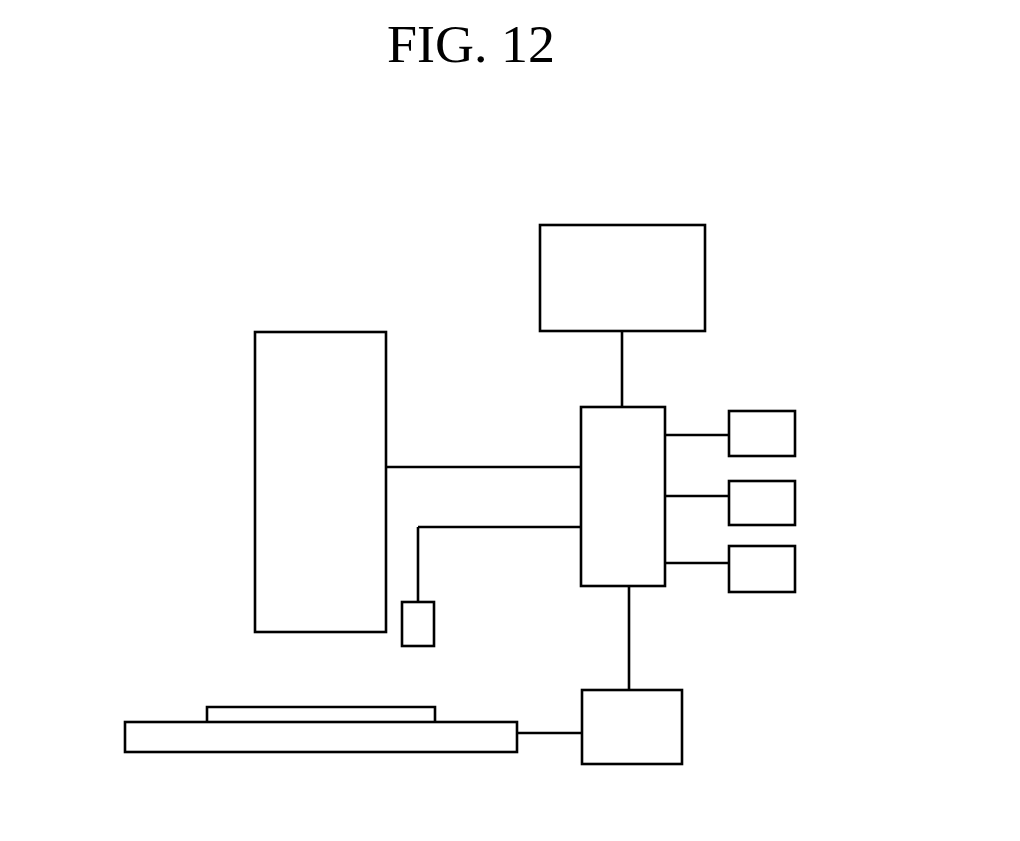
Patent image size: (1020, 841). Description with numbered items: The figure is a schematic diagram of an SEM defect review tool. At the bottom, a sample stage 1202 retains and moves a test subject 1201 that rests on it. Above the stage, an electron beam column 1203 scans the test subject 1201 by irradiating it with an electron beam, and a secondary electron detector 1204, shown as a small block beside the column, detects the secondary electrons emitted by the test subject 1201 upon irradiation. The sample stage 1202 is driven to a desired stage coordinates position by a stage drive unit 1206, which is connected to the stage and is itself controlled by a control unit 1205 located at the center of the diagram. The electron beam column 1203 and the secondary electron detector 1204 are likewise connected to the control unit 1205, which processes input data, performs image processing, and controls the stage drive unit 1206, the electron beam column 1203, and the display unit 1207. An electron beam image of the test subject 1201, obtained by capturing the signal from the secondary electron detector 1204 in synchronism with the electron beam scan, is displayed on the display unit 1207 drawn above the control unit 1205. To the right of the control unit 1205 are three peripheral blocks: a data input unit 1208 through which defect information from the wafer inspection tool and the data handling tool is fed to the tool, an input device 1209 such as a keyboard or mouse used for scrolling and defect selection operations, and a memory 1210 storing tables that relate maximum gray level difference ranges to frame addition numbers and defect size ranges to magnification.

The test subject 1201 is at (227, 707).
The sample stage 1202 is at (135, 730).
The electron beam column 1203 is at (258, 392).
The secondary electron detector 1204 is at (427, 620).
The control unit 1205 is at (645, 416).
The stage drive unit 1206 is at (667, 720).
The display unit 1207 is at (608, 232).
The data input unit 1208 is at (787, 433).
The input device 1209 is at (787, 493).
The memory 1210 is at (787, 573).